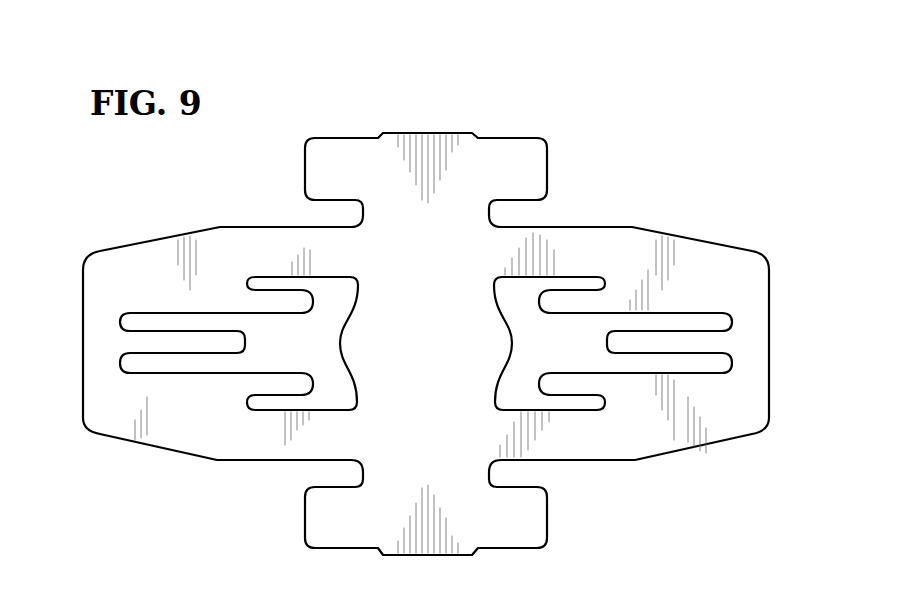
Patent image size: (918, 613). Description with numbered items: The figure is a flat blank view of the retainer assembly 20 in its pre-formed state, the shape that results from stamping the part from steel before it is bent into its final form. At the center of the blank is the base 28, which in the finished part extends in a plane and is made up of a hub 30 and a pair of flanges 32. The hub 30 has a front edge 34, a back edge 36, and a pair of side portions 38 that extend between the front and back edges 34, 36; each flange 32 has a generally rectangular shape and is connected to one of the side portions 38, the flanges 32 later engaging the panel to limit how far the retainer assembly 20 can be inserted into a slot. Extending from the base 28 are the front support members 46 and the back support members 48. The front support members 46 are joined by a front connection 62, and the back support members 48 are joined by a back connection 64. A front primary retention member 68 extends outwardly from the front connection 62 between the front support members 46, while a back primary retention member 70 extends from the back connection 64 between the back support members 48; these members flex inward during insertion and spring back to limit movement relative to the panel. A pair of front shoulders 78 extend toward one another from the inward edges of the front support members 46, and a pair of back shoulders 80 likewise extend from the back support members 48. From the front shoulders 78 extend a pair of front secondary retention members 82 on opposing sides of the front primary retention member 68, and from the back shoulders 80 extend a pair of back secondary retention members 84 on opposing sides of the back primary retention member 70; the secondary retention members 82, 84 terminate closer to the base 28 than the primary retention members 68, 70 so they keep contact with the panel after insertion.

The retainer assembly 20 is at (429, 333).
The base 28 is at (519, 346).
The hub 30 is at (502, 385).
The flanges 32 is at (508, 150).
The front edge 34 is at (512, 322).
The back edge 36 is at (340, 329).
The side portions 38 is at (437, 240).
The front support members 46 is at (620, 220).
The back support members 48 is at (228, 220).
The front connection 62 is at (753, 335).
The back connection 64 is at (95, 310).
The front primary retention member 68 is at (693, 323).
The back primary retention member 70 is at (163, 325).
The front shoulders 78 is at (625, 285).
The back shoulders 80 is at (227, 278).
The front secondary retention members 82 is at (562, 302).
The back secondary retention members 84 is at (272, 300).